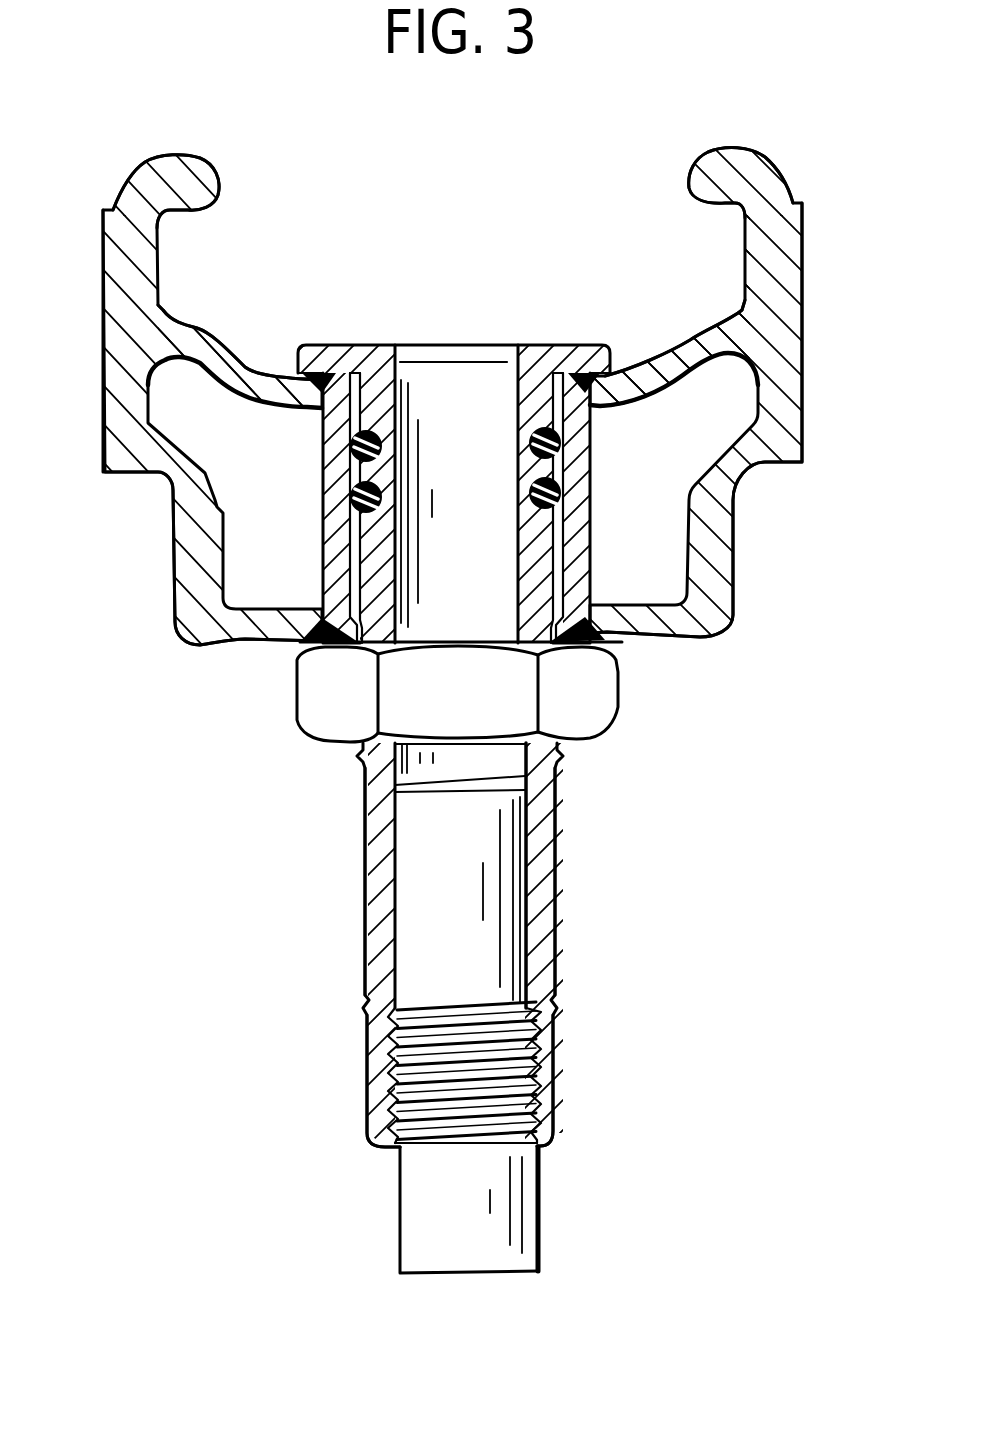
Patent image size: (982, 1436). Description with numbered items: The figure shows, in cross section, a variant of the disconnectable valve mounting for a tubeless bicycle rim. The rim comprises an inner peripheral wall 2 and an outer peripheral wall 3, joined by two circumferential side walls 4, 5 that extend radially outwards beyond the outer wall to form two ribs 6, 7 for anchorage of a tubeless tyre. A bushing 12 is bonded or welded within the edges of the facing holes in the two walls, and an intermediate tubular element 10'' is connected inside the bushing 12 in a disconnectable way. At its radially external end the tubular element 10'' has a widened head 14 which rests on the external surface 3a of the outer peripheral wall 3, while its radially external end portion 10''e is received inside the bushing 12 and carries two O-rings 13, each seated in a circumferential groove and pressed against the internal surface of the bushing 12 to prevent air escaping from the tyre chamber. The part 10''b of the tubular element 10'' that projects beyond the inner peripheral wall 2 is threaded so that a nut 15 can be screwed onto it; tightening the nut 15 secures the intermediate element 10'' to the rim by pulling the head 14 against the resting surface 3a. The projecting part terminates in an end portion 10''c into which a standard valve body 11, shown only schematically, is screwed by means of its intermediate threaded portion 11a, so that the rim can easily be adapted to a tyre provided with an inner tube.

The inner peripheral wall 2 is at (657, 632).
The outer peripheral wall 3 is at (227, 378).
The external surface 3a is at (650, 365).
The circumferential side wall 4 is at (197, 558).
The circumferential side wall 5 is at (713, 558).
The rib 6 is at (128, 207).
The rib 7 is at (777, 248).
The intermediate tubular element 10'' is at (410, 945).
The part of the intermediate tubular element 10''b is at (524, 948).
The end portion 10''c is at (524, 948).
The radially external end portion 10''e is at (436, 494).
The valve body 11 is at (543, 1207).
The intermediate threaded portion 11a is at (425, 1107).
The bushing 12 is at (571, 524).
The O-ring 13 is at (352, 446).
The widened head 14 is at (329, 363).
The nut 15 is at (317, 715).